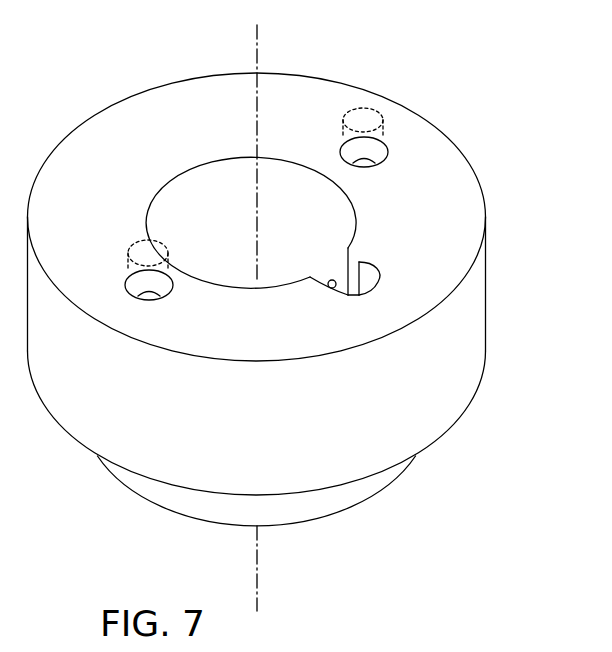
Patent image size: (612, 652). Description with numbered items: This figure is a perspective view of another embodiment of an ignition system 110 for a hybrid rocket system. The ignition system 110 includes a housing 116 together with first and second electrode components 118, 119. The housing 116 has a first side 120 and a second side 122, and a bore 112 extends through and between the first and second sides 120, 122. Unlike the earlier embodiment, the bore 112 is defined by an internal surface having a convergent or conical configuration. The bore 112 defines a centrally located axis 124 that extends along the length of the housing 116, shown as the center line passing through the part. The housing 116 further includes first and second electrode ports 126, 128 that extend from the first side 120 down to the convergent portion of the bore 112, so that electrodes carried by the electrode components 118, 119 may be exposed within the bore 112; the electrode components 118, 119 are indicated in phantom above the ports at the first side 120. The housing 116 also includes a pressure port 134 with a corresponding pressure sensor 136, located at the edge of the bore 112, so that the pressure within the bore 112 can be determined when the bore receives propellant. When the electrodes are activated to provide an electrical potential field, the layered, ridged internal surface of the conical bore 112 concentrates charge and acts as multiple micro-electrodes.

The ignition system 110 is at (309, 318).
The bore 112 is at (291, 186).
The housing 116 is at (490, 193).
The first electrode component 118 is at (368, 107).
The second electrode component 119 is at (133, 247).
The first side 120 is at (468, 222).
The second side 122 is at (359, 500).
The axis 124 is at (258, 42).
The first electrode port 126 is at (375, 163).
The second electrode port 128 is at (156, 297).
The pressure port 134 is at (331, 288).
The pressure sensor 136 is at (371, 278).